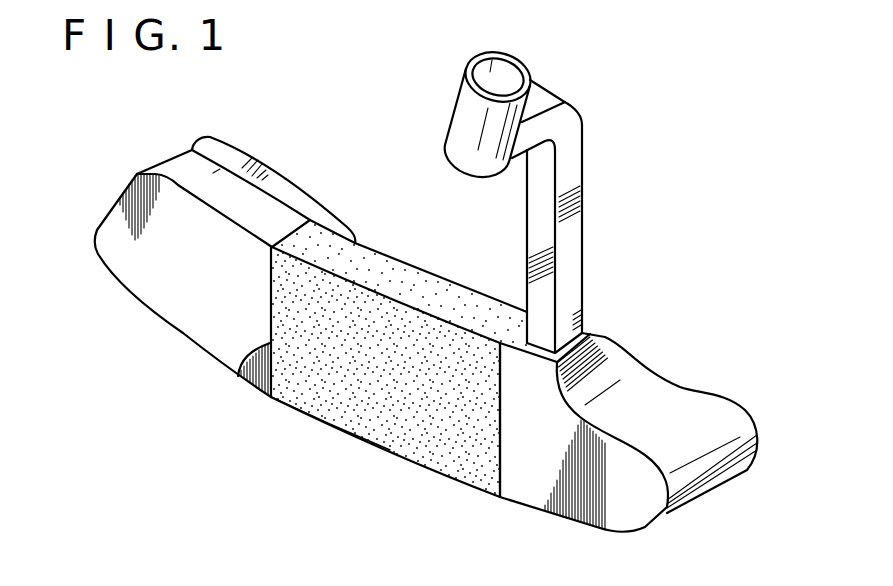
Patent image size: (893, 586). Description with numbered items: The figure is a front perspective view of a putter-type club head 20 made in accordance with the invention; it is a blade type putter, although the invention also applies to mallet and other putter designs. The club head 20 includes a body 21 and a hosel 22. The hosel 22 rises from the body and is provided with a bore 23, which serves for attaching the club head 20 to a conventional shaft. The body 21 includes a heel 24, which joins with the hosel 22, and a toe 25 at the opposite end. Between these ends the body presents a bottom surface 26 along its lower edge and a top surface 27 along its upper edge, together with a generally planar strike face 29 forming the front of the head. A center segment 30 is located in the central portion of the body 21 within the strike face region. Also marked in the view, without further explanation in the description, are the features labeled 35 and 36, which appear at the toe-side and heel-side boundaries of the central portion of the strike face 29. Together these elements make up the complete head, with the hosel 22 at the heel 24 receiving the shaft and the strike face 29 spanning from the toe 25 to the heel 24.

The putter-type club head 20 is at (680, 138).
The body 21 is at (213, 420).
The hosel 22 is at (622, 247).
The bore 23 is at (513, 77).
The heel 24 is at (614, 361).
The toe 25 is at (93, 240).
The bottom surface 26 is at (413, 467).
The top surface 27 is at (382, 270).
The strike face 29 is at (343, 413).
The center segment 30 is at (288, 394).
The toe-side edge of face insert 35 is at (237, 377).
The heel-side edge of face insert 36 is at (499, 465).